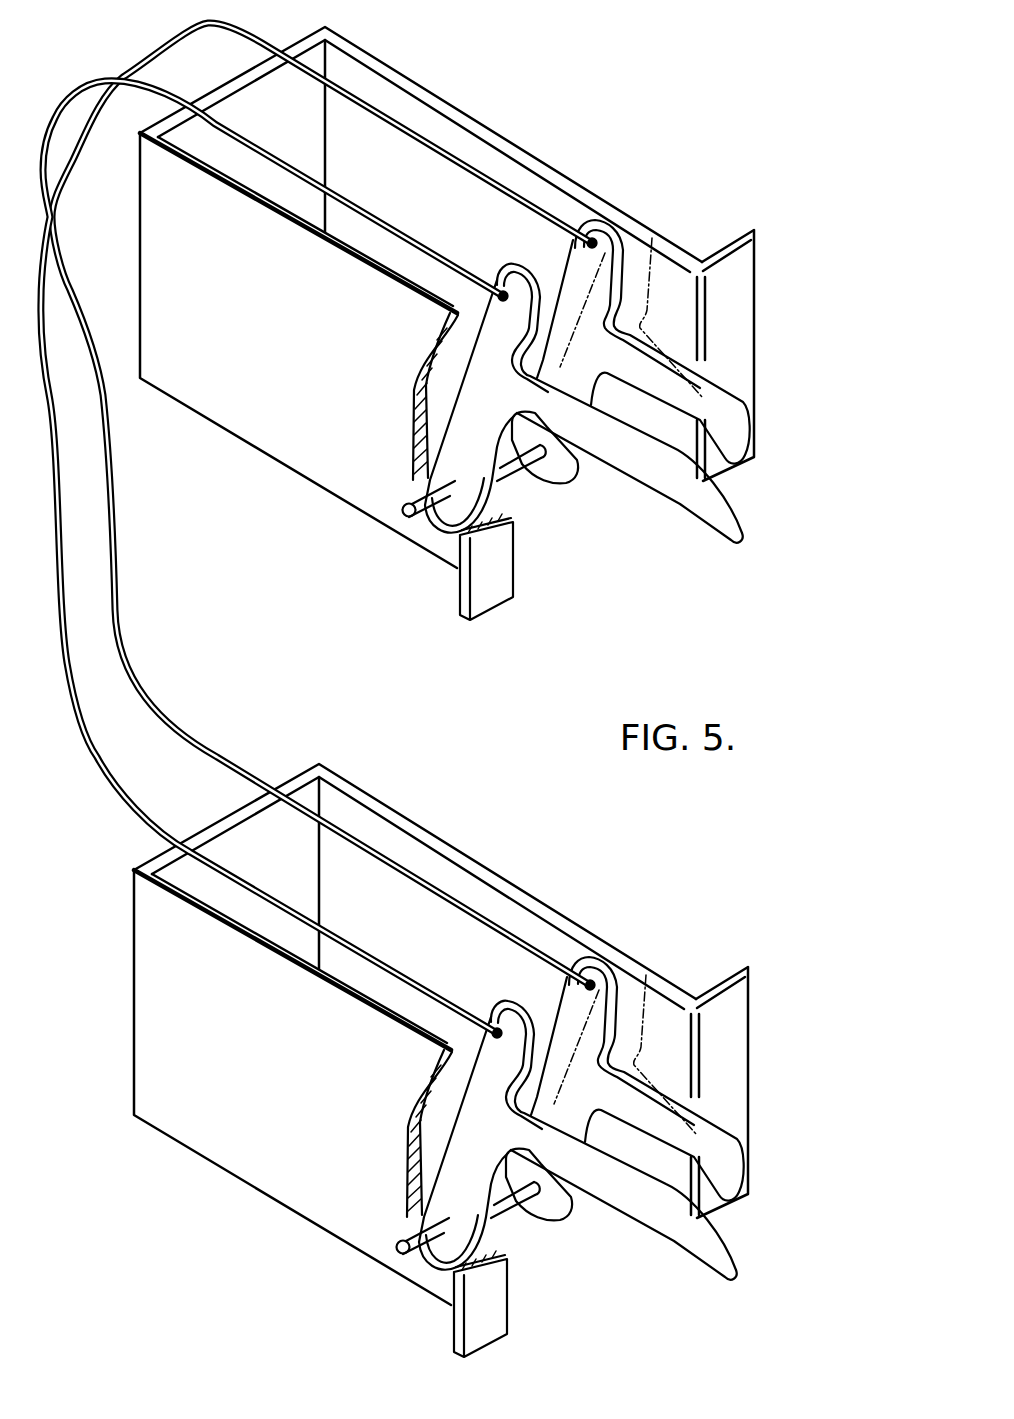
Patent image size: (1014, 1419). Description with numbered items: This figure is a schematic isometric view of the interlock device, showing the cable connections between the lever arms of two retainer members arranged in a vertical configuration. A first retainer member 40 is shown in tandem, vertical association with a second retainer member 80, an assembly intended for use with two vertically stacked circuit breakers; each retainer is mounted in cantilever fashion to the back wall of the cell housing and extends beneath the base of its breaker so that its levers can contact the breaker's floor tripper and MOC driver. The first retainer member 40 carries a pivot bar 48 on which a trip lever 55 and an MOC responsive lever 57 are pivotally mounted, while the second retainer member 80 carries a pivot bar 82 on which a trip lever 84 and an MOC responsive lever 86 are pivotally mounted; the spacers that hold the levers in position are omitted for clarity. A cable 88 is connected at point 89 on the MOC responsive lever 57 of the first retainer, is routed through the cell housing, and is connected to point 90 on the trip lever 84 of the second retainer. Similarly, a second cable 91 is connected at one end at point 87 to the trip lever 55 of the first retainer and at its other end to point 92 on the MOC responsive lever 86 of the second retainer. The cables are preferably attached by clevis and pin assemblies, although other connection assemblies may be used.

The first retainer member 40 is at (508, 131).
The pivot bar 48 is at (414, 486).
The trip lever 55 is at (668, 493).
The MOC responsive lever 57 is at (697, 392).
The second retainer member 80 is at (441, 1034).
The pivot bar 82 is at (451, 1218).
The trip lever 84 is at (572, 1179).
The MOC responsive lever 86 is at (664, 1079).
The connection point 87 is at (498, 278).
The cable 88 is at (395, 127).
The connection point 89 is at (606, 217).
The connection point 90 is at (476, 1001).
The second cable 91 is at (368, 213).
The connection point 92 is at (554, 972).